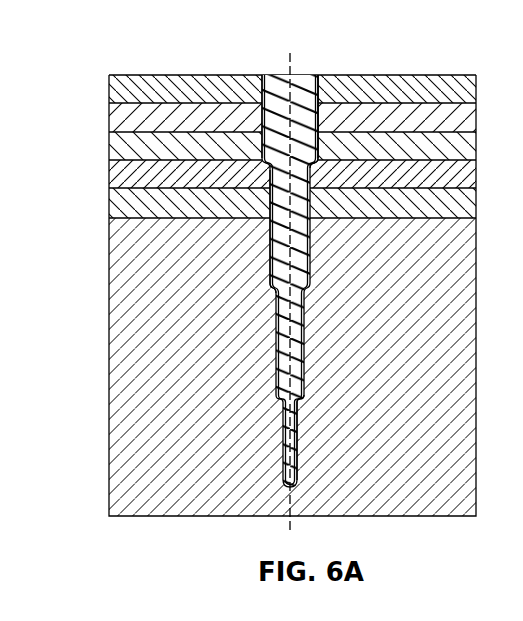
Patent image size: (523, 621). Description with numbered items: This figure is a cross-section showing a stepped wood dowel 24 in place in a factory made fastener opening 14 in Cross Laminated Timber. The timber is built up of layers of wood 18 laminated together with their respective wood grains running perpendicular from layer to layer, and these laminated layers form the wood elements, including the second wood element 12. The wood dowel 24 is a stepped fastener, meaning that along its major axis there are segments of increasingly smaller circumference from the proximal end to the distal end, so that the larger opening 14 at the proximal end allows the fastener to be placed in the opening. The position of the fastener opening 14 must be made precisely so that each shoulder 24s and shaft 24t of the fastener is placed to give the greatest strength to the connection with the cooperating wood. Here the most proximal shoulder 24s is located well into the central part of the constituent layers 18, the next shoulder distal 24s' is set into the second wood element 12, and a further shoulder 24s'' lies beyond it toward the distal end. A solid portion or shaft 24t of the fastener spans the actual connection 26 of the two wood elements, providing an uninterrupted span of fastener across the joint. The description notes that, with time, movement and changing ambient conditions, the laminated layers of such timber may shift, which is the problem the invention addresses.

The element 12 is at (292, 399).
The fastener opening 14 is at (272, 59).
The layers of wood 18 is at (109, 92).
The wood dowel 24 is at (307, 59).
The shaft 24t is at (316, 104).
The shoulder 24s is at (375, 103).
The next distal shoulder 24s' is at (162, 306).
The shoulder 24s'' is at (369, 476).
The connection 26 is at (104, 216).